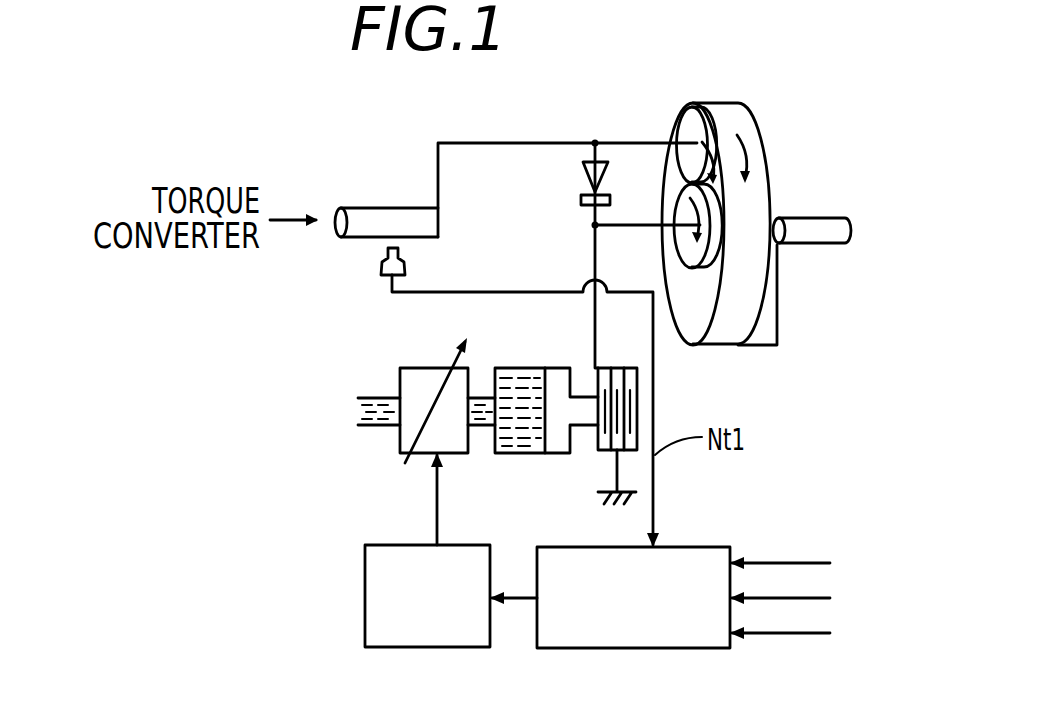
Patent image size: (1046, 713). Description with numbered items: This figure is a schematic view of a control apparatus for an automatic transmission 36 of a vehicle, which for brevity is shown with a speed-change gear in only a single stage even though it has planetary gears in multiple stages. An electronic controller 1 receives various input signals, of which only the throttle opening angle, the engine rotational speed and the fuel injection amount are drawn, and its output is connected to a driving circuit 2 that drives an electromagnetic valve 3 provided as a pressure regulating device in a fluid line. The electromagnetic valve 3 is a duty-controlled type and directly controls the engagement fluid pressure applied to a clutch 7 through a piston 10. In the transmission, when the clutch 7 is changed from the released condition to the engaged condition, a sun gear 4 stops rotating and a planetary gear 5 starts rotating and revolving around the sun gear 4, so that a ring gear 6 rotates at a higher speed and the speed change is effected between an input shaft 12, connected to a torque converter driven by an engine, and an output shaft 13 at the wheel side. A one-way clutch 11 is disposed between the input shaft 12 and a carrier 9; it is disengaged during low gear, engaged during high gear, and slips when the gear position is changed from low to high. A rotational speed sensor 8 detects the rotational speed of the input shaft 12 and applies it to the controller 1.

The electronic controller 1 is at (688, 547).
The driving circuit 2 is at (375, 545).
The electromagnetic valve 3 is at (415, 390).
The sun gear 4 is at (700, 275).
The planetary gear 5 is at (688, 127).
The ring gear 6 is at (737, 128).
The clutch 7 is at (622, 405).
The rotational speed sensor 8 is at (380, 265).
The carrier 9 is at (631, 222).
The piston 10 is at (505, 378).
The one-way clutch 11 is at (580, 176).
The input shaft 12 is at (363, 207).
The output shaft 13 is at (820, 243).
The automatic transmission 36 is at (790, 190).